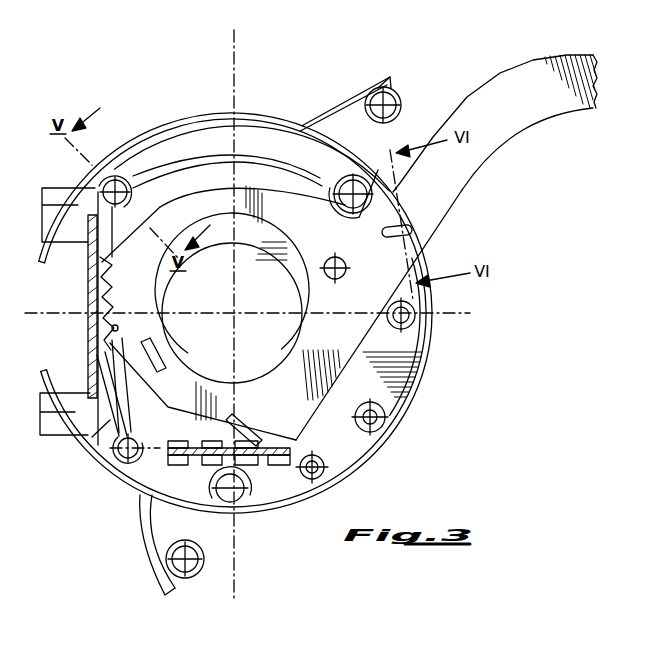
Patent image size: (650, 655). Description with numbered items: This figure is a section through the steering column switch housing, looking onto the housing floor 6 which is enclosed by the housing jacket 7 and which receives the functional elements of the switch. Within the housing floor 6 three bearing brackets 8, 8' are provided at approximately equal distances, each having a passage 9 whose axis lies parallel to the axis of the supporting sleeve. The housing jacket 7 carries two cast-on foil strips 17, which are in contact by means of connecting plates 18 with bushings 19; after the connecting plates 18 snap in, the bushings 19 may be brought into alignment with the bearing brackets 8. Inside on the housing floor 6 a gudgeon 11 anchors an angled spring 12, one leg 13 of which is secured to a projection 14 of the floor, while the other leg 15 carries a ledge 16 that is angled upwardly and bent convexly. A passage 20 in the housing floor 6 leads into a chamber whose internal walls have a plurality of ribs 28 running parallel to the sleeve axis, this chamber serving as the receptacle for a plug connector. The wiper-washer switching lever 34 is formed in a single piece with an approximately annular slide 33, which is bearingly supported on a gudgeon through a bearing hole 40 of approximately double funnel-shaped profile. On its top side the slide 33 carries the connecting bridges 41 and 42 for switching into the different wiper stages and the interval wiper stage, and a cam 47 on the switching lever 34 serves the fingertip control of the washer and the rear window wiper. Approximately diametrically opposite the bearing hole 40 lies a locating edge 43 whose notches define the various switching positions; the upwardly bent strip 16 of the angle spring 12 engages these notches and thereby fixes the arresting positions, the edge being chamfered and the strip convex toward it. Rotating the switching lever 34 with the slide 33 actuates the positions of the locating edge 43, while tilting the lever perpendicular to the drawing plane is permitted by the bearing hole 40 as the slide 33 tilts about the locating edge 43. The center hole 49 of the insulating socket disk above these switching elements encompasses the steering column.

The housing floor 6 is at (135, 442).
The housing jacket 7 is at (416, 386).
The bearing bracket 8 is at (293, 376).
The bearing bracket 8' is at (123, 158).
The passage 9 is at (110, 173).
The gudgeon 11 is at (123, 472).
The angled spring 12 is at (127, 472).
The leg 13 is at (100, 456).
The projection 14 is at (103, 412).
The leg 15 is at (135, 400).
The ledge 16 is at (118, 322).
The foil strip 17 is at (301, 126).
The connecting plate 18 is at (365, 84).
The bushing 19 is at (398, 98).
The passage 20 is at (263, 467).
The ribs 28 is at (222, 463).
The annular slide 33 is at (282, 334).
The wiper-washer switching lever 34 is at (522, 112).
The bearing hole 40 is at (341, 280).
The connecting bridge 41 is at (158, 355).
The connecting bridge 42 is at (240, 415).
The locating edge 43 is at (118, 275).
The cam 47 is at (409, 227).
The center hole 49 is at (198, 257).